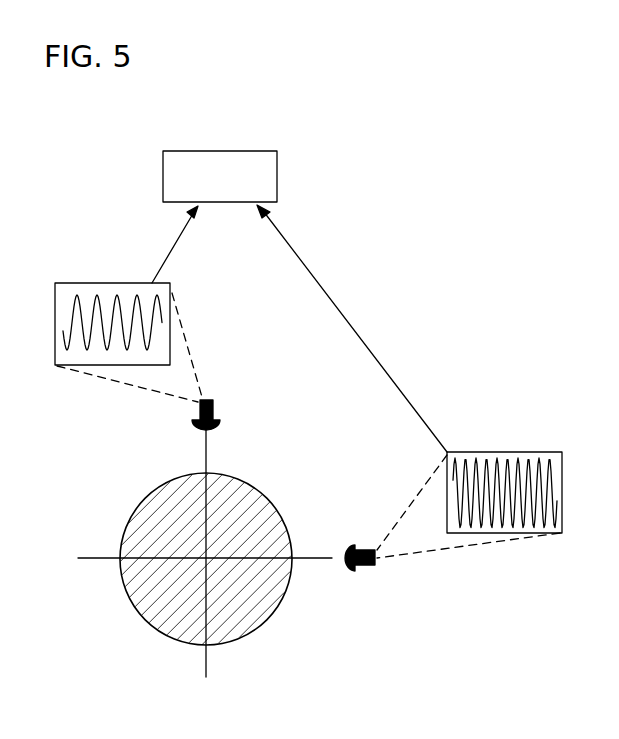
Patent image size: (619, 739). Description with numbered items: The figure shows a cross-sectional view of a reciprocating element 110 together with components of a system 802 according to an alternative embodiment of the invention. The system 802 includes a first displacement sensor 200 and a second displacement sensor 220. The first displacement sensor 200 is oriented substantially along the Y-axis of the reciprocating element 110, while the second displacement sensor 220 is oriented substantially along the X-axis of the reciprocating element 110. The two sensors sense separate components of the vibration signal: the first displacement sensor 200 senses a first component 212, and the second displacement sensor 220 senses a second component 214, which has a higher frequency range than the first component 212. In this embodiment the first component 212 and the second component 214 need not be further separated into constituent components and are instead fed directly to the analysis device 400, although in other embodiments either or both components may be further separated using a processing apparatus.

The system 802 is at (371, 151).
The analysis device 400 is at (163, 180).
The first component 212 is at (95, 283).
The second component 214 is at (493, 452).
The first displacement sensor 200 is at (217, 420).
The second displacement sensor 220 is at (357, 570).
The reciprocating element 110 is at (145, 500).